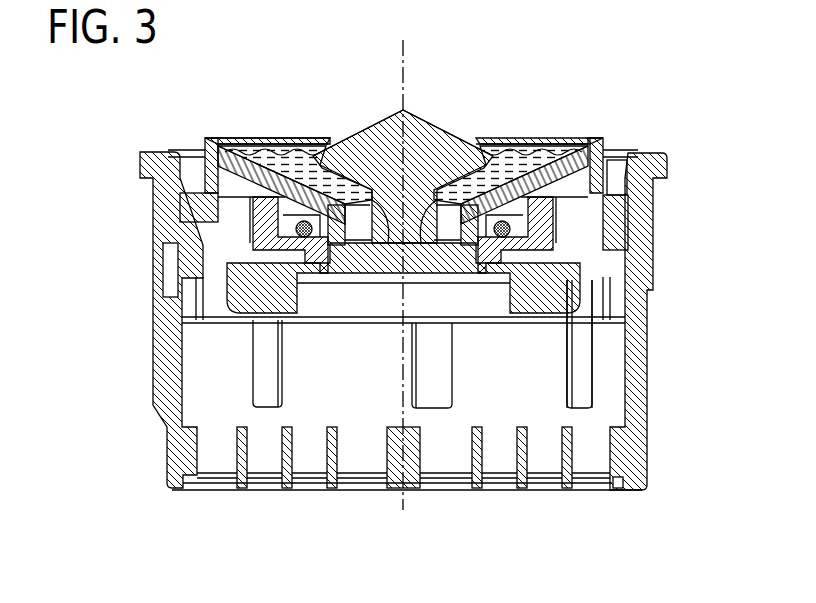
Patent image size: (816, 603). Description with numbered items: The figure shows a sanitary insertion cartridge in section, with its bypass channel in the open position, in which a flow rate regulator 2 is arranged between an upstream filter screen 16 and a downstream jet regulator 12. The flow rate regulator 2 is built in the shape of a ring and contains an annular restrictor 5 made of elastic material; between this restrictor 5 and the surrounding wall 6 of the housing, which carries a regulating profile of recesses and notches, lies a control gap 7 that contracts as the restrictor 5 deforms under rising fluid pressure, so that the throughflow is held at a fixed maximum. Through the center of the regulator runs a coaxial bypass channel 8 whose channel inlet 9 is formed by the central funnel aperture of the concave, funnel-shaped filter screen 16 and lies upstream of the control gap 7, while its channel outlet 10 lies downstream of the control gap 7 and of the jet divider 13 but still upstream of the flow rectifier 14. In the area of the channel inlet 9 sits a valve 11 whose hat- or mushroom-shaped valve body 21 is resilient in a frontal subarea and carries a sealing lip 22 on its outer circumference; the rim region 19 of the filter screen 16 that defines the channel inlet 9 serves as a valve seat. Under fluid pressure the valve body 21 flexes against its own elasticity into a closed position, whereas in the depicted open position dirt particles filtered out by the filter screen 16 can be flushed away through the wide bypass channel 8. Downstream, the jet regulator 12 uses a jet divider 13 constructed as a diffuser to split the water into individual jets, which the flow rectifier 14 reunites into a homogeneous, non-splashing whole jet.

The flow rate regulator 2 is at (557, 188).
The annular restrictor 5 is at (303, 248).
The wall of the housing 6 is at (292, 222).
The control gap 7 is at (266, 238).
The bypass channel 8 is at (366, 235).
The channel inlet 9 is at (508, 150).
The channel outlet 10 is at (378, 262).
The valve 11 is at (435, 106).
The jet regulator 12 is at (647, 358).
The jet divider 13 is at (580, 268).
The flow rectifier 14 is at (596, 453).
The filter screen 16 is at (544, 136).
The rim region 19 is at (354, 213).
The valve body 21 is at (384, 148).
The sealing lip 22 is at (332, 162).